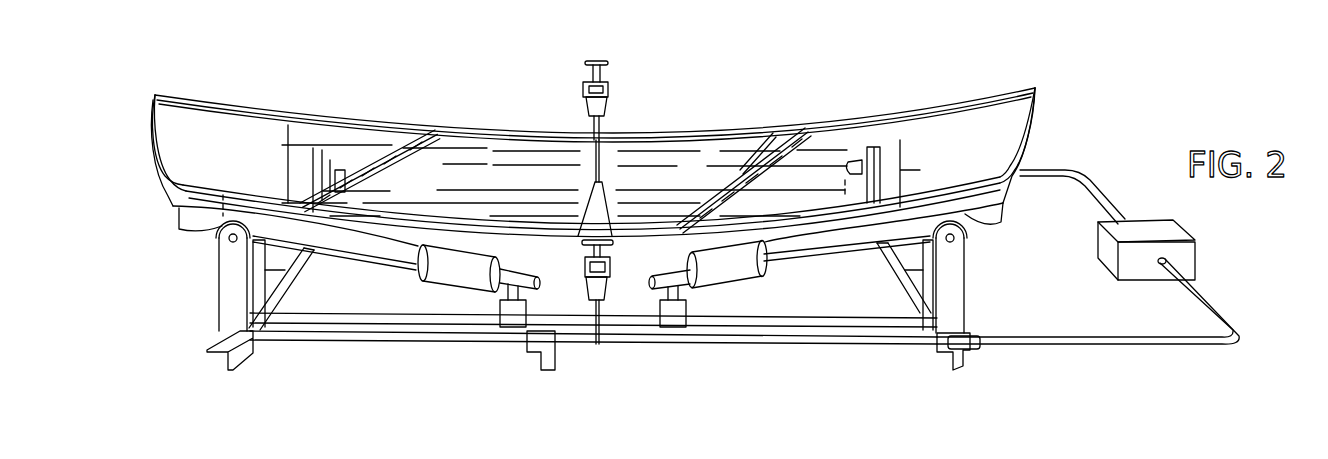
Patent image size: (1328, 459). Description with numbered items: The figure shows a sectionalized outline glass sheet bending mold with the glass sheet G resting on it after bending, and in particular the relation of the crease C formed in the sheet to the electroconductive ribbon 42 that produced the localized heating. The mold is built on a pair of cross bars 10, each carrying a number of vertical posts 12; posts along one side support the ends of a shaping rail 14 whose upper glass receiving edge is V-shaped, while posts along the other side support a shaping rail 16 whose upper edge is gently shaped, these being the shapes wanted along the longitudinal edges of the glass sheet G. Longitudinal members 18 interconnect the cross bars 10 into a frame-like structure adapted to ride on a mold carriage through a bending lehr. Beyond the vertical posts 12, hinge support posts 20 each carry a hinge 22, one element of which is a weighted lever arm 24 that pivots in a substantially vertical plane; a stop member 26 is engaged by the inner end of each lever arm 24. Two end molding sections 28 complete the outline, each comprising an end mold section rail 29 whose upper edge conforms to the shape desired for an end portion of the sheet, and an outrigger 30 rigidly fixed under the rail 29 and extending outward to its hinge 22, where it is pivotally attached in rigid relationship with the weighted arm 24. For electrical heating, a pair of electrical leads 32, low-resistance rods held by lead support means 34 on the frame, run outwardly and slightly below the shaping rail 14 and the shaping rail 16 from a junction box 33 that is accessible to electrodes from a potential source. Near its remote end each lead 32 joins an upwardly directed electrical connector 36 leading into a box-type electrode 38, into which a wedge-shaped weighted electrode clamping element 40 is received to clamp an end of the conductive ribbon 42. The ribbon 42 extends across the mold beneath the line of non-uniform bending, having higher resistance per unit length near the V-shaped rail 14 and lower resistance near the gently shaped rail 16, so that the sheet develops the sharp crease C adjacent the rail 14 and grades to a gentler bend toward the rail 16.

The glass sheet G is at (384, 124).
The crease C is at (598, 155).
The cross bars 10 is at (280, 292).
The vertical posts 12 is at (287, 270).
The shaping rail 14 is at (822, 155).
The shaping rail 16 is at (490, 250).
The longitudinal members 18 is at (485, 195).
The hinge support posts 20 is at (227, 308).
The hinge 22 is at (223, 240).
The lever arm 24 is at (405, 268).
The stop member 26 is at (688, 287).
The end molding section 28 is at (150, 170).
The end mold section rail 29 is at (152, 122).
The outrigger 30 is at (192, 219).
The electrical leads 32 is at (1040, 168).
The junction box 33 is at (1180, 232).
The lead support means 34 is at (853, 160).
The electrical connector 36 is at (598, 320).
The box-type electrode 38 is at (588, 110).
The electrode clamping element 40 is at (611, 90).
The conductive ribbon 42 is at (610, 213).